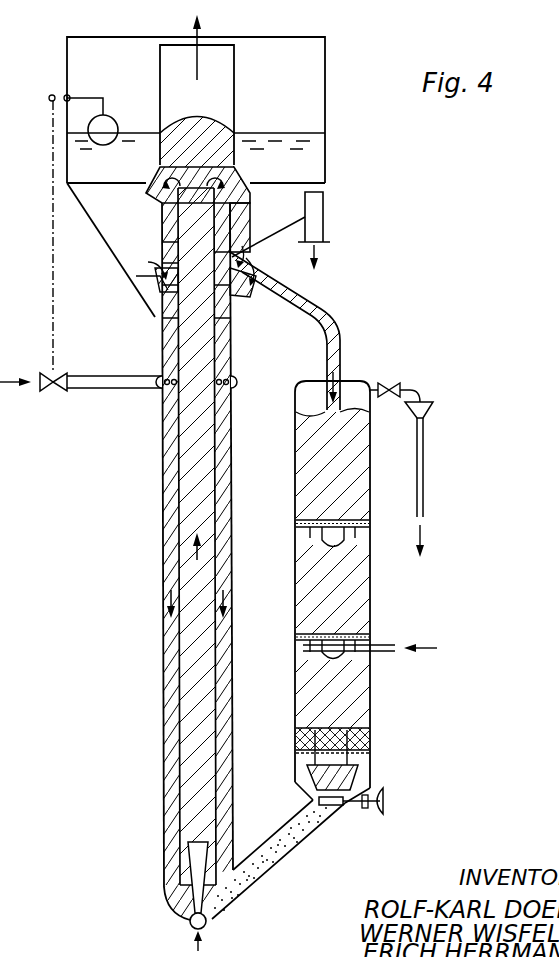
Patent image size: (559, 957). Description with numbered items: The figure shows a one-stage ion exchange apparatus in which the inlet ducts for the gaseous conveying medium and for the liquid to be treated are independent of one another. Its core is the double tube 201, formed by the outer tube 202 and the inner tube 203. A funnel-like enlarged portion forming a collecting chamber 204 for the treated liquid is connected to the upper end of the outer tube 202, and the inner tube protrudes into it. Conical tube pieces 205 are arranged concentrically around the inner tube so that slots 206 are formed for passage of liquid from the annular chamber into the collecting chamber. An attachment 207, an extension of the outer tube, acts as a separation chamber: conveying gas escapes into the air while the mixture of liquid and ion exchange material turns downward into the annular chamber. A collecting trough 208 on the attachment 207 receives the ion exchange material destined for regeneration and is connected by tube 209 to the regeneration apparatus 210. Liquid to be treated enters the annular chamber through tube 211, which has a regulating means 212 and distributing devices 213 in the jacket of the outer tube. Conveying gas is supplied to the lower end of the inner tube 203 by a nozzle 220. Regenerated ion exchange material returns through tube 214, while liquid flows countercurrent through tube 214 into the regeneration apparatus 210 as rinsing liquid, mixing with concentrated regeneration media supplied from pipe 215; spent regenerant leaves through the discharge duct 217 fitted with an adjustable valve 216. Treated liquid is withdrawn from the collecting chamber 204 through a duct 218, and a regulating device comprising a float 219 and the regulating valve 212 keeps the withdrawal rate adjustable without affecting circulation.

The double tube 201 is at (163, 468).
The outer tube 202 is at (160, 533).
The inner tube 203 is at (173, 482).
The collecting chamber 204 is at (317, 82).
The conical tube pieces 205 is at (158, 265).
The slots 206 is at (158, 278).
The attachment 207 is at (253, 208).
The collecting trough 208 is at (248, 233).
The tube 209 is at (323, 293).
The regeneration apparatus 210 is at (372, 575).
The tube 211 is at (107, 389).
The regulating means 212 is at (47, 393).
The distributing devices 213 is at (236, 376).
The tube 214 is at (296, 846).
The pipe 215 is at (392, 644).
The adjustable valve 216 is at (397, 384).
The discharge duct 217 is at (433, 476).
The duct 218 is at (323, 213).
The float 219 is at (100, 97).
The nozzle 220 is at (206, 926).